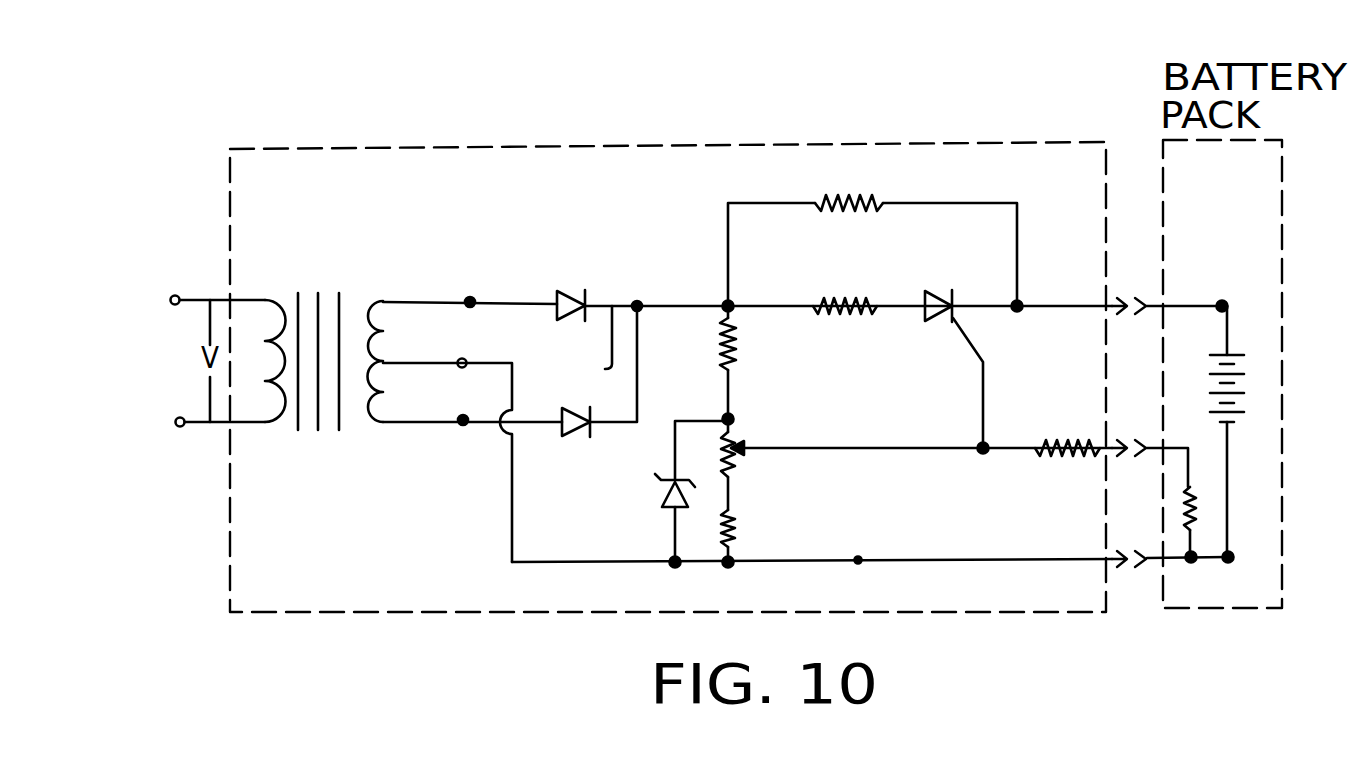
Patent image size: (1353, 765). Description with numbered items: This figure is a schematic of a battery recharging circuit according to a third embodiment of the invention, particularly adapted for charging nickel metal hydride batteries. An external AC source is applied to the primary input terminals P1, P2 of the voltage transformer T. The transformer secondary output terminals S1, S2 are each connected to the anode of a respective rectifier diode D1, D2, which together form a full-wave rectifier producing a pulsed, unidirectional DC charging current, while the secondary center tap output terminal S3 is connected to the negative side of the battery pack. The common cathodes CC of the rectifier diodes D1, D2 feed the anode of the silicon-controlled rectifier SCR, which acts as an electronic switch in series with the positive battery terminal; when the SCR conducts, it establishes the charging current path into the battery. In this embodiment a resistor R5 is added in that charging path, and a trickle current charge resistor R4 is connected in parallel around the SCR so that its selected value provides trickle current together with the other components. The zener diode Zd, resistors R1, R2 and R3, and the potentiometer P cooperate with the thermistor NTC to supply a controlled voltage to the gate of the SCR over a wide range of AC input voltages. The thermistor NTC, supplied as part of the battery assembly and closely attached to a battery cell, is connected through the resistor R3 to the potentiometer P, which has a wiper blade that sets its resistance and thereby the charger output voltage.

The primary input terminal P1 is at (172, 305).
The primary input terminal P2 is at (181, 427).
The voltage transformer T is at (324, 382).
The transformer secondary output terminal S1 is at (468, 308).
The transformer secondary output terminal S2 is at (463, 426).
The transformer secondary center tap output terminal S3 is at (462, 368).
The rectifier diode D1 is at (585, 290).
The rectifier diode D2 is at (592, 437).
The common cathodes CC is at (637, 352).
The zener diode Zd is at (665, 492).
The resistor R1 is at (751, 362).
The resistor R2 is at (752, 539).
The resistor R3 is at (1063, 425).
The trickle current charge resistor R4 is at (872, 229).
The resistor R5 is at (845, 329).
The potentiometer P is at (916, 457).
The silicon-controlled rectifier SCR is at (951, 353).
The negative temperature coefficient thermistor NTC is at (1212, 544).